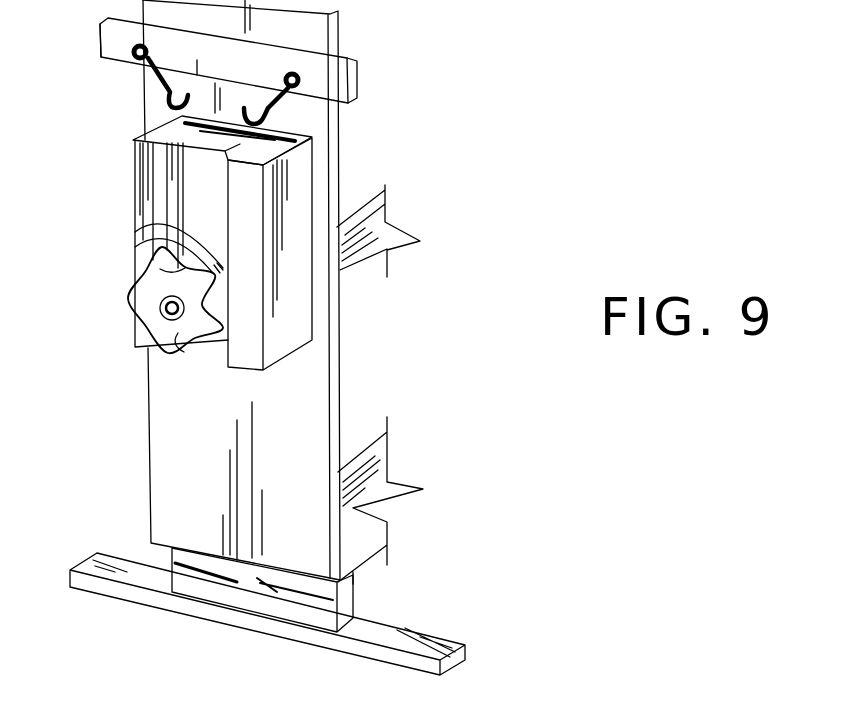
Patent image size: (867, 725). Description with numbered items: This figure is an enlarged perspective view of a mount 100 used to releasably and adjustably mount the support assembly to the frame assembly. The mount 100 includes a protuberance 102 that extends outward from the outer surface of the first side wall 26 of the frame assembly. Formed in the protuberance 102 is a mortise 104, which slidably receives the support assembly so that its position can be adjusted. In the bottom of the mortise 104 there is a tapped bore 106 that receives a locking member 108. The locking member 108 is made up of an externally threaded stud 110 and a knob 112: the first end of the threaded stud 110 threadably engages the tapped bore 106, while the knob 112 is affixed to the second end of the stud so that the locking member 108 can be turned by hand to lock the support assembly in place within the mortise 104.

The mount 100 is at (414, 140).
The first side wall 26 is at (317, 423).
The protuberance 102 is at (303, 222).
The mortise 104 is at (197, 173).
The tapped bore 106 is at (135, 230).
The locking member 108 is at (130, 320).
The externally threaded stud 110 is at (133, 252).
The knob 112 is at (145, 304).